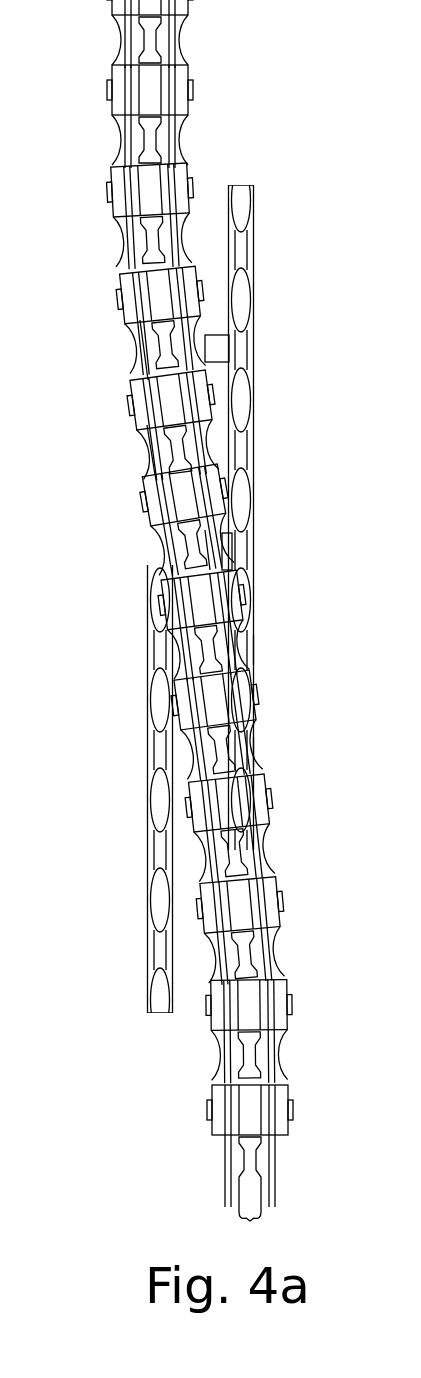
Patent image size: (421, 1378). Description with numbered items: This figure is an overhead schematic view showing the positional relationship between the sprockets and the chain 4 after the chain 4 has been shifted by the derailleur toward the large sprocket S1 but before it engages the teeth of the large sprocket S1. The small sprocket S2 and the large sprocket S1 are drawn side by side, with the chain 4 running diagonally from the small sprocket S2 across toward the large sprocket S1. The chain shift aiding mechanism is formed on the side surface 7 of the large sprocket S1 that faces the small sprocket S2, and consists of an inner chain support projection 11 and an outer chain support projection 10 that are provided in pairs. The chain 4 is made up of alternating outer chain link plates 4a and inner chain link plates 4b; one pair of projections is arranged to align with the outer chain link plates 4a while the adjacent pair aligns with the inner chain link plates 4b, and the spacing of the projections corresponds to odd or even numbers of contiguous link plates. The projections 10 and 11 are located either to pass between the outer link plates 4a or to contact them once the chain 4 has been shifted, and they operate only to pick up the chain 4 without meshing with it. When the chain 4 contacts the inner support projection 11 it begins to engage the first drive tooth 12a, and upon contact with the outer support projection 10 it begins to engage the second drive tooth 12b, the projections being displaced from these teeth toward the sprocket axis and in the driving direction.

The chain 4 is at (205, 121).
The outer chain link plates 4a is at (160, 457).
The inner chain link plates 4b is at (155, 355).
The side surface 7 is at (228, 231).
The outer chain support projection 10 is at (244, 551).
The inner chain support projection 11 is at (218, 323).
The first drive tooth 12a is at (254, 751).
The second drive tooth 12b is at (254, 650).
The large sprocket S1 is at (296, 493).
The small sprocket S2 is at (138, 705).